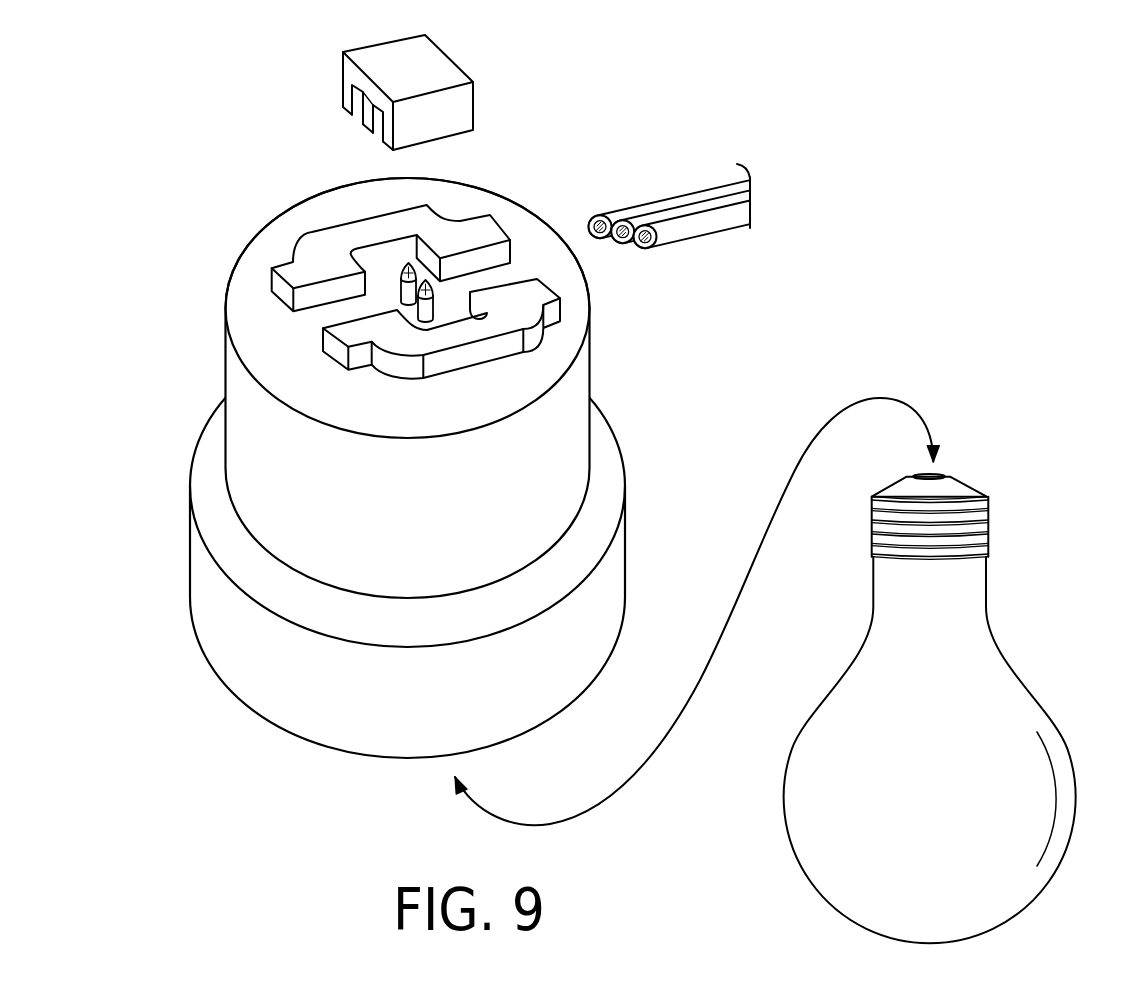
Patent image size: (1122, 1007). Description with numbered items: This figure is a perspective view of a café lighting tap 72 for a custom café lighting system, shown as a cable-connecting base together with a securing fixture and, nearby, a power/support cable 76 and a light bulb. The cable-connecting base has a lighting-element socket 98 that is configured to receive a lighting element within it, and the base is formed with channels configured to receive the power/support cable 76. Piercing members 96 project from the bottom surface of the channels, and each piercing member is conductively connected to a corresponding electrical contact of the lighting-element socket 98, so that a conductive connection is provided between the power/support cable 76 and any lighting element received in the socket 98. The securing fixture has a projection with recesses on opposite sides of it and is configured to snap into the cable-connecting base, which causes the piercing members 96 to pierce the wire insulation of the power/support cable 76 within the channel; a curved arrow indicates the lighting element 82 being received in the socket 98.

The lighting-element socket 98 is at (242, 713).
The piercing members 96 is at (434, 298).
The power/support cable 76 is at (667, 195).
The café lighting tap 72 is at (677, 333).
The light bulb 82 is at (1033, 493).